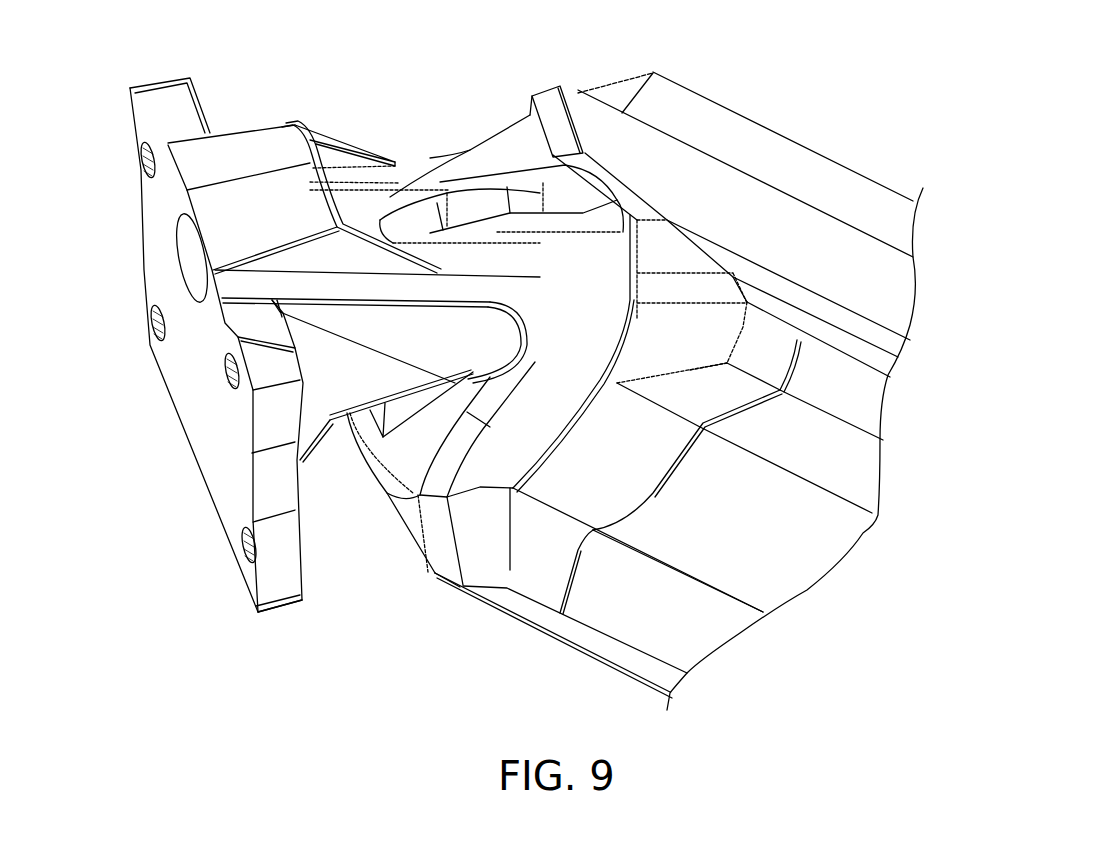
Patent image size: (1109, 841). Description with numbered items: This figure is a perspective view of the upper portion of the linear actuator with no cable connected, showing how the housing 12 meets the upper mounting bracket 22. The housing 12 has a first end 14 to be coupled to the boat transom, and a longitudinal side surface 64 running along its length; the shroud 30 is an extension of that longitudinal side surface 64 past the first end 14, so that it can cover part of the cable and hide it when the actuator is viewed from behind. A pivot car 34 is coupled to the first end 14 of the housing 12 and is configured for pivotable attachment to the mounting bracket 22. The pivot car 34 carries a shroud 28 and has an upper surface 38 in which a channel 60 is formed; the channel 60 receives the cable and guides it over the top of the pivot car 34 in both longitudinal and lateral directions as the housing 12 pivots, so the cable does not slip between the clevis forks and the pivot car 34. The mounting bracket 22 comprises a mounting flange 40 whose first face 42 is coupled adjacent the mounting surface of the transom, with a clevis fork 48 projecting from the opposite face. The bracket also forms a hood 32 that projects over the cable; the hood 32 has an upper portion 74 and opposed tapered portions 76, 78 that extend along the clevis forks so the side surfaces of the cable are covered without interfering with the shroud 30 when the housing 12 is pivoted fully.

The housing 12 is at (553, 637).
The first end 14 is at (503, 453).
The upper mounting bracket 22 is at (147, 218).
The shroud 28 is at (580, 250).
The shroud 30 is at (568, 75).
The hood 32 is at (245, 127).
The pivot car 34 is at (530, 260).
The upper surface 38 is at (540, 165).
The mounting flange 40 is at (282, 585).
The first face 42 is at (183, 388).
The clevis fork 48 is at (438, 349).
The channel 60 is at (497, 200).
The longitudinal side surface 64 is at (760, 195).
The upper portion 74 is at (268, 230).
The tapered portion 76 is at (380, 220).
The tapered portion 78 is at (340, 137).